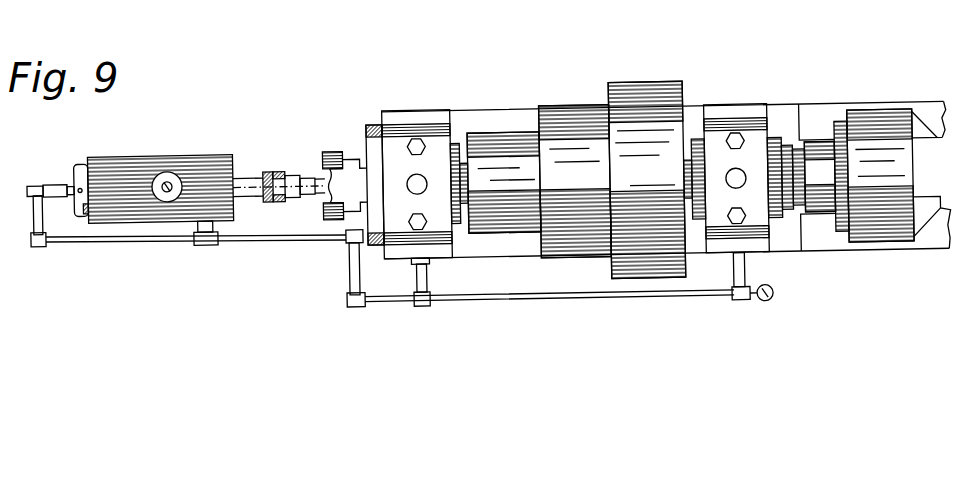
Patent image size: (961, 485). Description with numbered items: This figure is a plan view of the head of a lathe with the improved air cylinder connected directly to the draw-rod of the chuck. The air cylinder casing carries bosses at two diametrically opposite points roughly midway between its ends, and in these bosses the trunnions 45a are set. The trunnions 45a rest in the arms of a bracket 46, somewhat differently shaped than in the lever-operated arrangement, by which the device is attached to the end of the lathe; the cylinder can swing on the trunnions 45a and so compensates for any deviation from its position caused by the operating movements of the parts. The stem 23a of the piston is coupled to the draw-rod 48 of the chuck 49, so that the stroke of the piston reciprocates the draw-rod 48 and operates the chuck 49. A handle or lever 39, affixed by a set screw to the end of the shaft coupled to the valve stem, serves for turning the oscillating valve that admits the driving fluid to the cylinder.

The stem of the piston 23a is at (245, 182).
The trunnions 45a is at (169, 177).
The draw-rod 48 is at (289, 178).
The bracket 46 is at (571, 181).
The chuck 49 is at (852, 125).
The handle or lever 39 is at (764, 308).